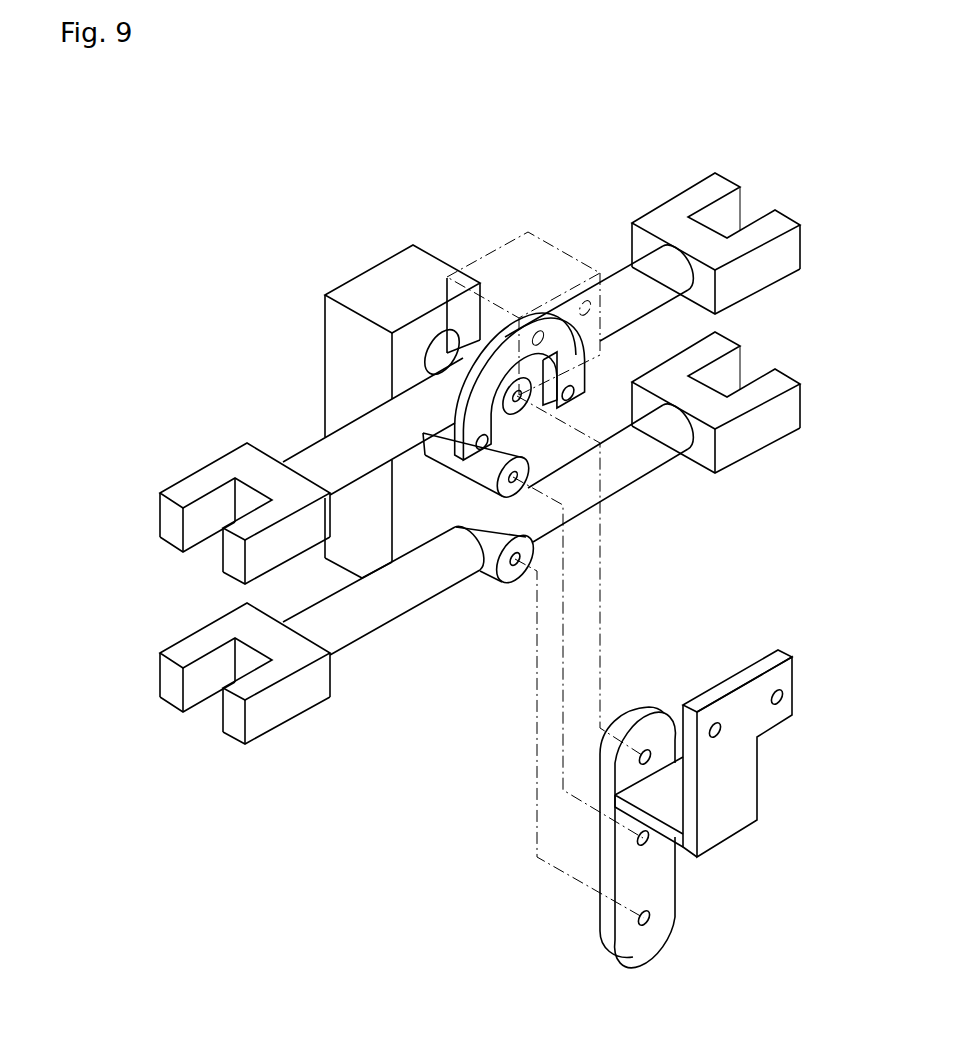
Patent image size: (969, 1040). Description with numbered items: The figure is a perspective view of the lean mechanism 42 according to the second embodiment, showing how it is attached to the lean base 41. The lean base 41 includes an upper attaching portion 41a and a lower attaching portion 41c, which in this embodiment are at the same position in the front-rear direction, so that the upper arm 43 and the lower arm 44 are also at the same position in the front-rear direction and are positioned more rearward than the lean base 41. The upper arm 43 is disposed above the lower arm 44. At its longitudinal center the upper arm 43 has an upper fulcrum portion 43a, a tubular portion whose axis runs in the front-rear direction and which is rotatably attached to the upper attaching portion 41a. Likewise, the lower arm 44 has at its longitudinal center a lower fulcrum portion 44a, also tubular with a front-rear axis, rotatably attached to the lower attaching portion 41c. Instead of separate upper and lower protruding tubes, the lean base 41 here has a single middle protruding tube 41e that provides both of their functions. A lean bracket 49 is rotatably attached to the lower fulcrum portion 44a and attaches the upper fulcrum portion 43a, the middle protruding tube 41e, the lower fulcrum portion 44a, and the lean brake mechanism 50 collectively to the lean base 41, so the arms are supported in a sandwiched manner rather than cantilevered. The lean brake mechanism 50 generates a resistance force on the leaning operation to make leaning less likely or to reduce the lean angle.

The lean mechanism 42 is at (128, 178).
The lean base 41 is at (300, 325).
The upper attaching portion 41a is at (406, 340).
The lower attaching portion 41c is at (428, 548).
The middle protruding tube 41e is at (398, 545).
The upper arm 43 is at (626, 270).
The upper fulcrum portion 43a is at (444, 333).
The lower arm 44 is at (655, 462).
The lower fulcrum portion 44a is at (512, 574).
The lean bracket 49 is at (817, 656).
The lean brake mechanism 50 is at (481, 250).